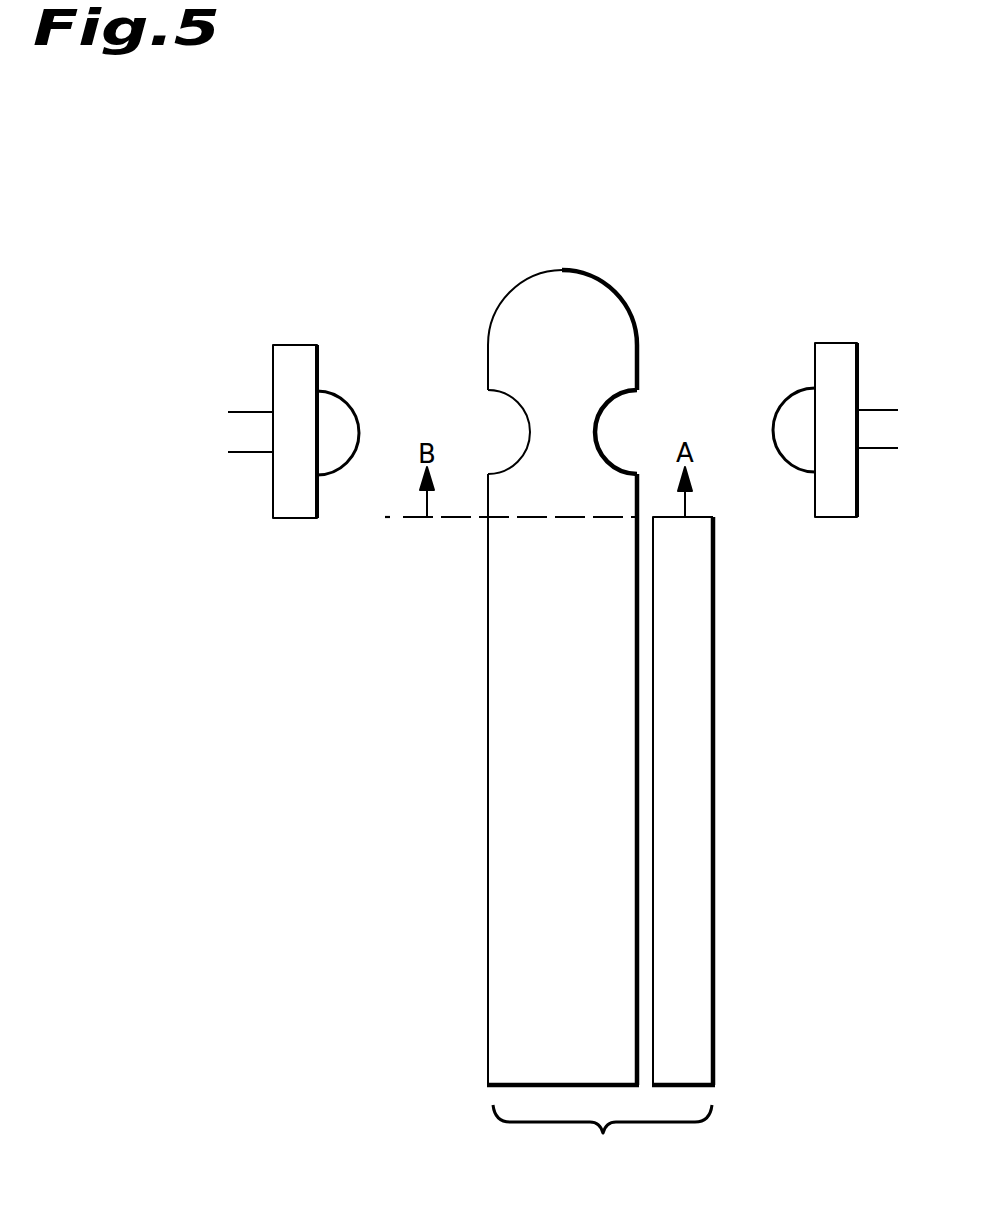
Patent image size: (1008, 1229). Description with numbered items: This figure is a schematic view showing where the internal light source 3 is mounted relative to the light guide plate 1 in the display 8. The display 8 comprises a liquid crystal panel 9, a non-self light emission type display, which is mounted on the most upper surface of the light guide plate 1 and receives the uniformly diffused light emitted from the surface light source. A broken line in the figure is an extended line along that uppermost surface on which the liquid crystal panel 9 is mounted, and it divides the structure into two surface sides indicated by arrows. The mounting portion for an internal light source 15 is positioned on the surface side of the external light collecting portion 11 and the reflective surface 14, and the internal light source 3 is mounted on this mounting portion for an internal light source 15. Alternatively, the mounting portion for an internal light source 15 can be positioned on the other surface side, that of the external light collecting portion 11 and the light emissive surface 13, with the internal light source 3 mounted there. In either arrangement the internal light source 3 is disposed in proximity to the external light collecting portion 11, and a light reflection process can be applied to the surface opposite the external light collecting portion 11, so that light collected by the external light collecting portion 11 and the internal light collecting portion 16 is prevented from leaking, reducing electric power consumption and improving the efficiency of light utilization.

The light guide plate 1 is at (581, 624).
The internal light source 3 is at (295, 365).
The display 8 is at (583, 669).
The liquid crystal panel 9 is at (688, 622).
The external light collecting portion 11 is at (533, 310).
The light emissive surface 13 is at (638, 730).
The reflective surface 14 is at (490, 705).
The mounting portion for an internal light source 15 is at (488, 390).
The internal light collecting portion 16 is at (518, 402).